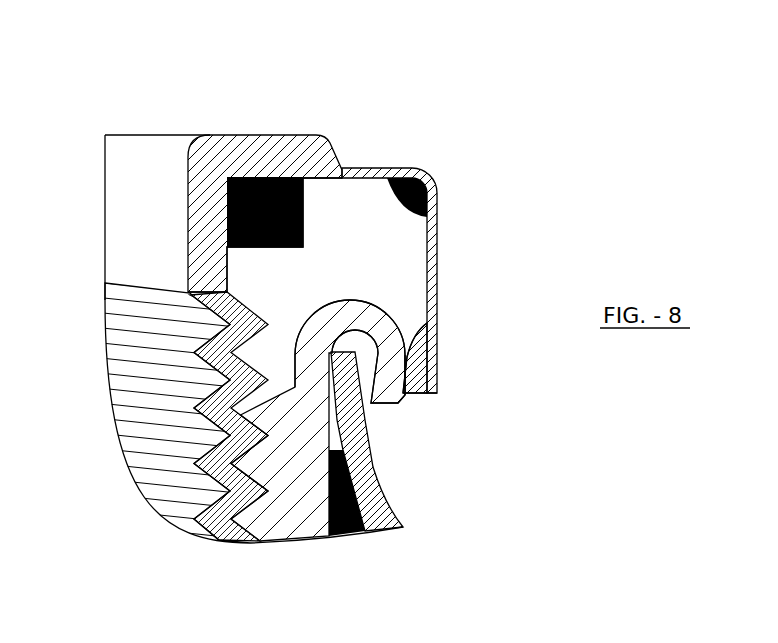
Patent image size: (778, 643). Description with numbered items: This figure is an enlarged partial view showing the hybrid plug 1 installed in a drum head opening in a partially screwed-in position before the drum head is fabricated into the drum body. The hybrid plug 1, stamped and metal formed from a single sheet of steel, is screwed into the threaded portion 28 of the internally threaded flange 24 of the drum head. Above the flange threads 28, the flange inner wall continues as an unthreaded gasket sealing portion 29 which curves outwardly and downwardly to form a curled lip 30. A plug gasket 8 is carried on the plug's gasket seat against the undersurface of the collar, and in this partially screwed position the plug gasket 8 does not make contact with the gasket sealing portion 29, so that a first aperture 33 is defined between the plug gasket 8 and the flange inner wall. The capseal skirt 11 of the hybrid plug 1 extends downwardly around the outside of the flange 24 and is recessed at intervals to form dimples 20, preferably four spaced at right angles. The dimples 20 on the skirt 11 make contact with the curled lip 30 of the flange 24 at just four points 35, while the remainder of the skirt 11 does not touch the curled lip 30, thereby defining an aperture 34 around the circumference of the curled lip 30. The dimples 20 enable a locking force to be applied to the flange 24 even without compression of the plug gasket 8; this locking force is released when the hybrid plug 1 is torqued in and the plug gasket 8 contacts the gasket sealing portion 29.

The hybrid plug 1 is at (143, 134).
The plug gasket 8 is at (306, 212).
The skirt 11 is at (438, 297).
The dimples 20 is at (413, 360).
The flange 24 is at (280, 531).
The threaded portion 28 is at (238, 418).
The gasket sealing portion 29 is at (294, 345).
The curled lip 30 is at (403, 412).
The first aperture 33 is at (313, 279).
The aperture 34 is at (412, 394).
The points 35 is at (410, 364).